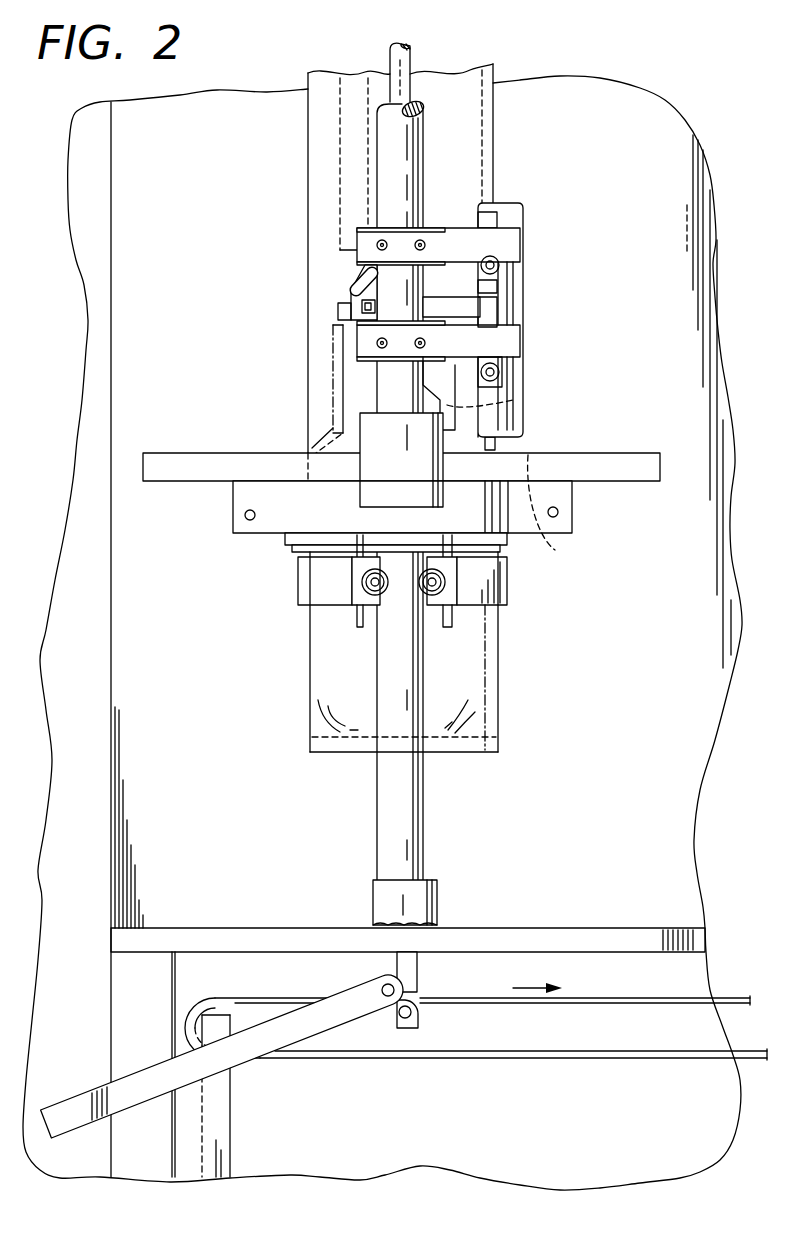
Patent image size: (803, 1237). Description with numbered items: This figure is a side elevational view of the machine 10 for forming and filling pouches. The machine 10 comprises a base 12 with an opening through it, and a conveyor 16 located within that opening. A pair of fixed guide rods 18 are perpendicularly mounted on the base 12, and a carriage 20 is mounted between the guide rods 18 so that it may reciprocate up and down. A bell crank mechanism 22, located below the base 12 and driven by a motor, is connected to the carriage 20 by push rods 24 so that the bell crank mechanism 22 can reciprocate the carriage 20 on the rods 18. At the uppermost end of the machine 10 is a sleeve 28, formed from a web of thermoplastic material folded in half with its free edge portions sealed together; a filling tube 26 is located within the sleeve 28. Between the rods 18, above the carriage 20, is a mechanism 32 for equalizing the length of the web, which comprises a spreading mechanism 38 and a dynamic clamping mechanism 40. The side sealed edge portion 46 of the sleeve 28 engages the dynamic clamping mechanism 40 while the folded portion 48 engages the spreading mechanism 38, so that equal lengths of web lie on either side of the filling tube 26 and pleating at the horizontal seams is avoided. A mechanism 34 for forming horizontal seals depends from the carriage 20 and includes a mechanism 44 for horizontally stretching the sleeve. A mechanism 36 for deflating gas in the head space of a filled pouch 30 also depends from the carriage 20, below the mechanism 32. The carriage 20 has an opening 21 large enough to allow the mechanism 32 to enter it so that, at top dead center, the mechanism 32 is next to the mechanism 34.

The machine 10 is at (172, 707).
The base 12 is at (572, 930).
The conveyor 16 is at (535, 1055).
The fixed guide rods 18 is at (385, 180).
The carriage 20 is at (643, 452).
The opening 21 is at (565, 514).
The bell crank mechanism 22 is at (288, 1032).
The push rods 24 is at (412, 960).
The filling tube 26 is at (403, 62).
The sleeve 28 is at (460, 177).
The filled pouch 30 is at (473, 689).
The mechanism for equalizing the length of the web 32 is at (537, 403).
The mechanism for forming horizontal seals 34 is at (572, 502).
The mechanism for deflating gas 36 is at (513, 575).
The spreading mechanism 38 is at (326, 365).
The dynamic clamping mechanism 40 is at (517, 225).
The mechanism for horizontally stretching the sleeve 44 is at (513, 400).
The side sealed edge portion 46 is at (495, 123).
The folded portion 48 is at (308, 142).